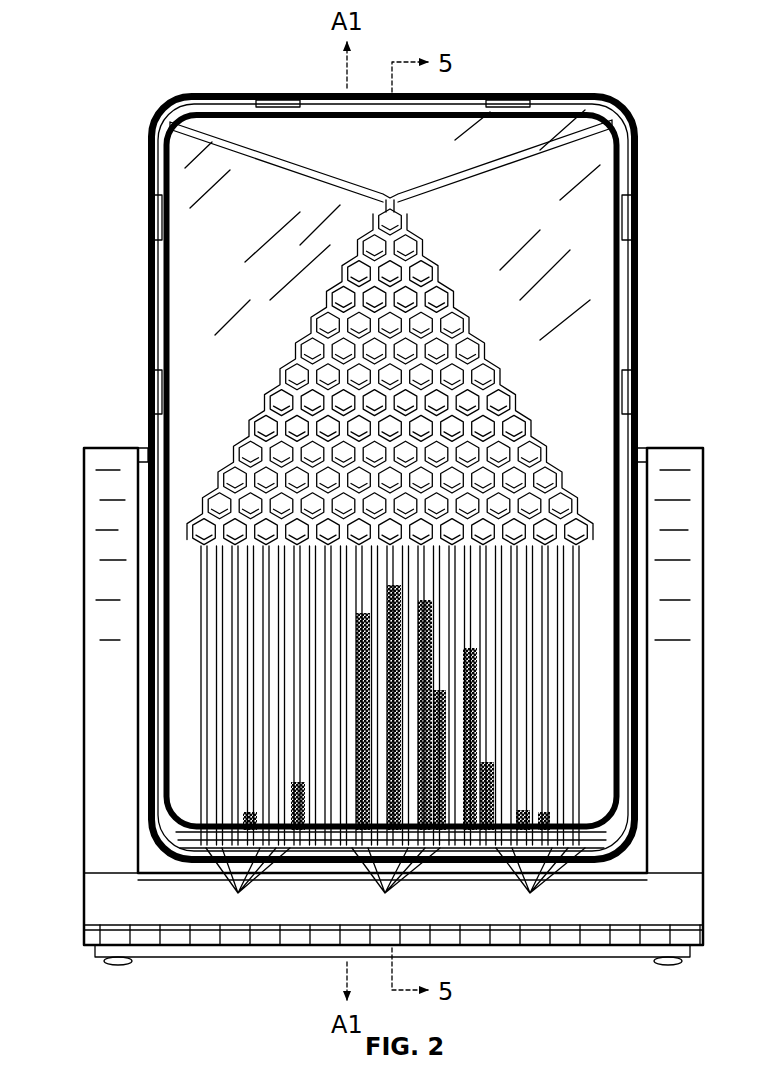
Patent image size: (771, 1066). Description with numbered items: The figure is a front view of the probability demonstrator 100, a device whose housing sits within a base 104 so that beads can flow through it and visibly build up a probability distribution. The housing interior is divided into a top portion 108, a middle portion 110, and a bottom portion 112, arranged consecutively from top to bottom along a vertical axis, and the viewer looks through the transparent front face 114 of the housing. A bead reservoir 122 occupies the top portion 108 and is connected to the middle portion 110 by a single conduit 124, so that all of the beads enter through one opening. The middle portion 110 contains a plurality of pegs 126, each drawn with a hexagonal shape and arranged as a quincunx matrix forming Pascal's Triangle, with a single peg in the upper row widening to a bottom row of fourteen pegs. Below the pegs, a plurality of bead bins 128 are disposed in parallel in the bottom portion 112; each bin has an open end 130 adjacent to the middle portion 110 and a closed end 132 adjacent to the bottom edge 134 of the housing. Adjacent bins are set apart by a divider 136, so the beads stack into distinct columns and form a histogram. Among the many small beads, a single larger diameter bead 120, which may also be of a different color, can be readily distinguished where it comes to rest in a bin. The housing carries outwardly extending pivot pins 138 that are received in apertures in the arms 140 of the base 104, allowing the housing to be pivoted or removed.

The probability demonstrator 100 is at (655, 50).
The base 104 is at (690, 628).
The top portion 108 is at (478, 93).
The middle portion 110 is at (612, 335).
The bottom portion 112 is at (600, 790).
The front face 114 is at (271, 207).
The single larger diameter bead 120 is at (456, 645).
The bead reservoir 122 is at (480, 135).
The single conduit 124 is at (404, 198).
The pegs 126 is at (384, 224).
The bead bins 128 is at (310, 648).
The open end 130 is at (192, 518).
The closed end 132 is at (395, 886).
The bottom edge 134 is at (610, 863).
The divider 136 is at (200, 790).
The pivot pins 138 is at (145, 448).
The arms 140 is at (95, 622).